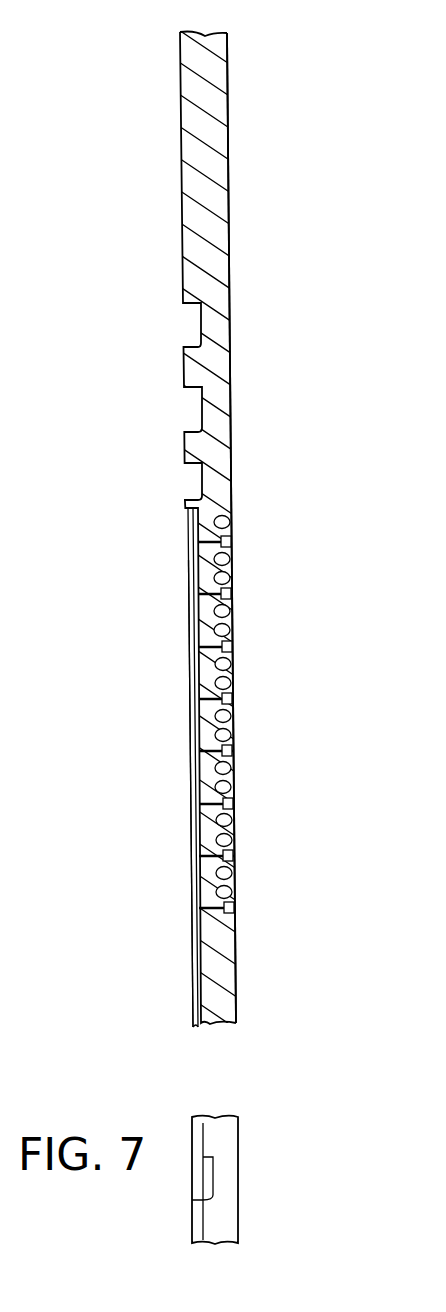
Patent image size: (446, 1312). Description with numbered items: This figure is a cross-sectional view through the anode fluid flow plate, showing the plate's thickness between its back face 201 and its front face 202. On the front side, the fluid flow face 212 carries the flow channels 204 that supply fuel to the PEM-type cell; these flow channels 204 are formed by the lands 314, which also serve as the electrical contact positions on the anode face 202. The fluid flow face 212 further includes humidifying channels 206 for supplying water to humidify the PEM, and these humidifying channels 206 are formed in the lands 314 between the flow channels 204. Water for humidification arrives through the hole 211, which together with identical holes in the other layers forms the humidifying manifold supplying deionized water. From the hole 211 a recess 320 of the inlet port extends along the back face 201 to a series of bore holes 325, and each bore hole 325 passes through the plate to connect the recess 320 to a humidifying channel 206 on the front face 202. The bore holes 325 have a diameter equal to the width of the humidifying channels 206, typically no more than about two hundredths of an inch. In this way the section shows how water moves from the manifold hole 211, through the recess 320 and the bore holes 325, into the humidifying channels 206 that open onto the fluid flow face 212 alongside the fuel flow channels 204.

The back face 201 is at (181, 127).
The front face 202 is at (228, 127).
The flow channel 204 is at (229, 522).
The humidifying channel 206 is at (229, 542).
The hole 211 is at (225, 1058).
The fluid flow face 212 is at (236, 788).
The land 314 is at (229, 572).
The recess 320 is at (197, 965).
The bore hole 325 is at (190, 540).